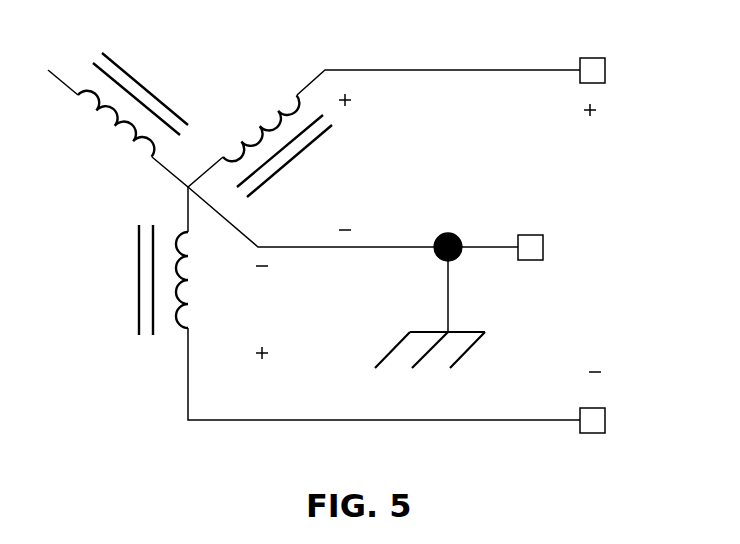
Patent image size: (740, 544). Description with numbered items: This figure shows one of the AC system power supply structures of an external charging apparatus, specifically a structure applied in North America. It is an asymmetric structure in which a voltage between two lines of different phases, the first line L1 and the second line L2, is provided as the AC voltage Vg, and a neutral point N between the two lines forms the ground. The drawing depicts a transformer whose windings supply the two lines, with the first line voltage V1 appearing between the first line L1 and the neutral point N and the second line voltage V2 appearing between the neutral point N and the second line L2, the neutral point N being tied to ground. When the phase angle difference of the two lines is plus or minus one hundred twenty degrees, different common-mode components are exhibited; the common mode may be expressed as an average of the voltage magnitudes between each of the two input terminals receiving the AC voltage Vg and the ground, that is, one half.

The first line L1 is at (614, 86).
The second line L2 is at (614, 405).
The neutral point N is at (488, 263).
The first line voltage V1 is at (314, 141).
The second line voltage V2 is at (359, 303).
The AC voltage Vg is at (491, 298).